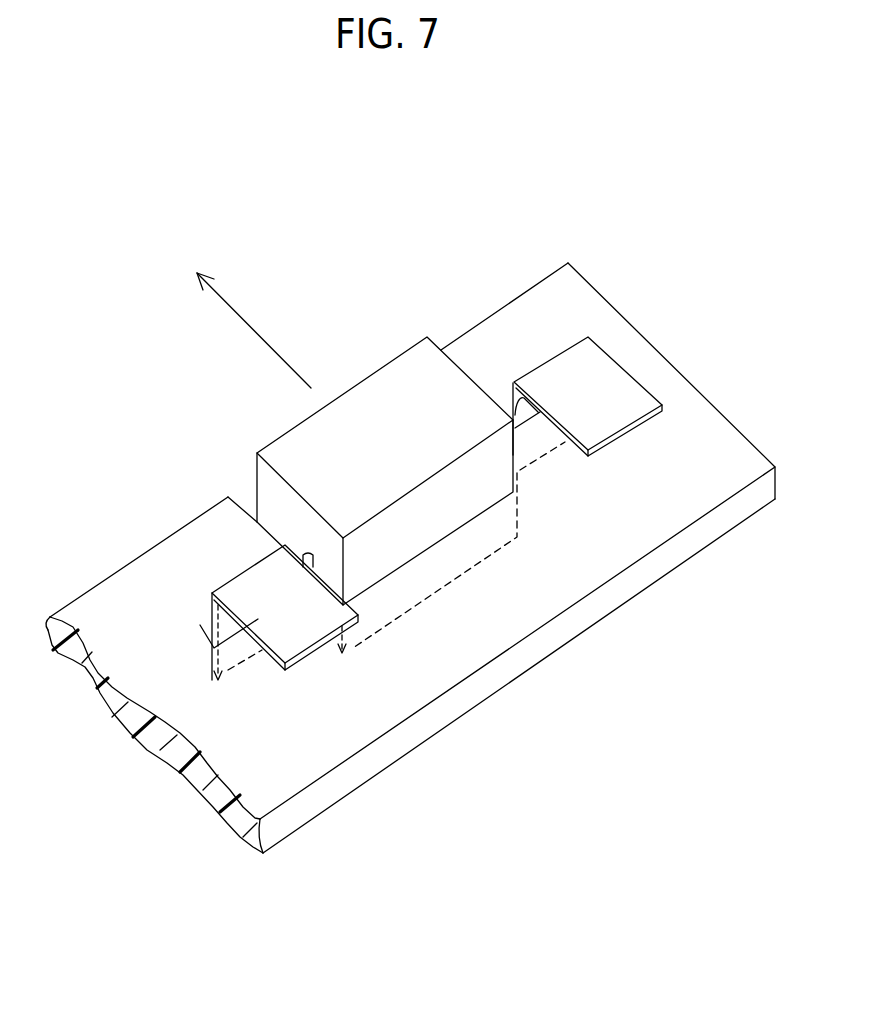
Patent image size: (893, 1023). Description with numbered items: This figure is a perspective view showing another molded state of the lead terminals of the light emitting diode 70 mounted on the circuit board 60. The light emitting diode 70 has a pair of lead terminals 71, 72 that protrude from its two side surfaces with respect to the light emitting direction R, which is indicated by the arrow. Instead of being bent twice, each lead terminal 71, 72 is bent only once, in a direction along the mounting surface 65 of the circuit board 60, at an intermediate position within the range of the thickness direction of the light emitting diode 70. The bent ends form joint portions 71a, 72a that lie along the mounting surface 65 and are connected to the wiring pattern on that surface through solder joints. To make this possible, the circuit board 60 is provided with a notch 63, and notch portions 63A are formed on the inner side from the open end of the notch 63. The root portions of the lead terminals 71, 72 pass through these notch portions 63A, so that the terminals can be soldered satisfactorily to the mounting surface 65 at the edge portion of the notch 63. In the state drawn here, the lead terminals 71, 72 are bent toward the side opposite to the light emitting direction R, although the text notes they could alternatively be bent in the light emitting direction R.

The circuit board 60 is at (712, 453).
The notch 63 is at (245, 490).
The notch portions 63A is at (212, 635).
The mounting surface 65 is at (542, 300).
The light emitting diode 70 is at (390, 358).
The lead terminal 71 is at (595, 360).
The joint portion 71a is at (637, 405).
The lead terminal 72 is at (211, 645).
The joint portion 72a is at (285, 665).
The light emitting direction R is at (255, 330).